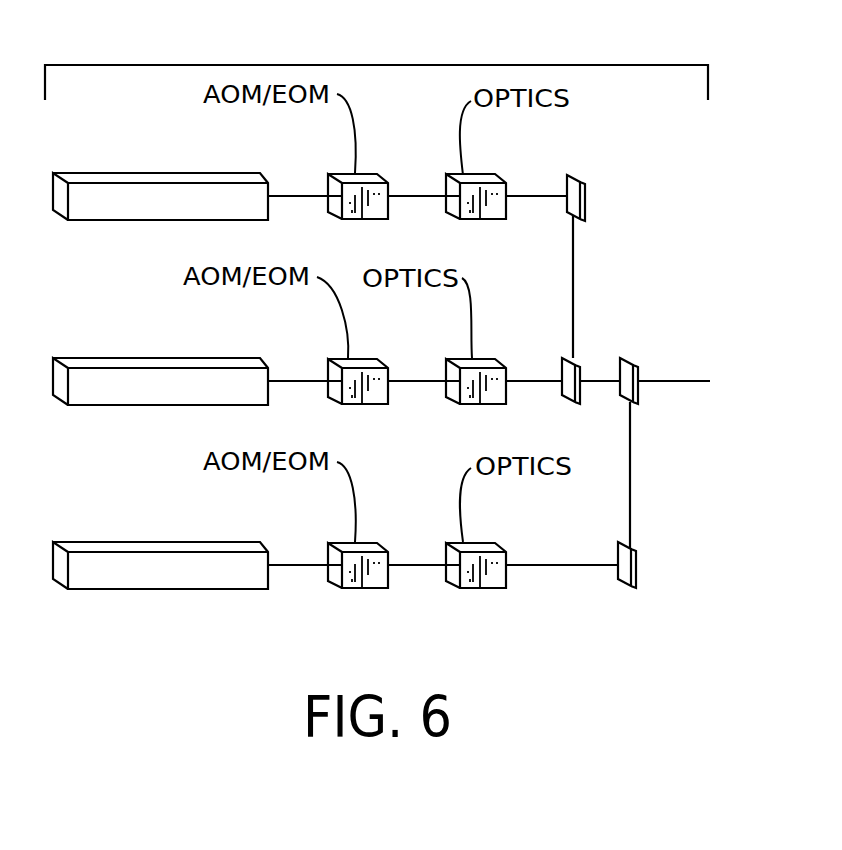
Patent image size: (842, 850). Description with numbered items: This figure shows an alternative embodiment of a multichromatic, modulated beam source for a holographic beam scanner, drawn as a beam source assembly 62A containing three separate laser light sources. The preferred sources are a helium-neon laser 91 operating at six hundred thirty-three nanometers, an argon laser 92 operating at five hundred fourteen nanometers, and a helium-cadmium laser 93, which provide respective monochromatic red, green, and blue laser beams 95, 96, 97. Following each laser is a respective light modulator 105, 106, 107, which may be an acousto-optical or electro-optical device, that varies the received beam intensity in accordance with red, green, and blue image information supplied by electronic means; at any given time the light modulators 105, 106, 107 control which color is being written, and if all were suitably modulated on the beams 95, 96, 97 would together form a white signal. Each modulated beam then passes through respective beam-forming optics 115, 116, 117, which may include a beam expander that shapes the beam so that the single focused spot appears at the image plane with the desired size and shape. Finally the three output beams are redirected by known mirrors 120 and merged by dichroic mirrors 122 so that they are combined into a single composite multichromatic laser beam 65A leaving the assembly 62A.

The beam source assembly 62A is at (345, 63).
The helium-neon laser 91 is at (168, 181).
The argon laser 92 is at (168, 366).
The helium-cadmium laser 93 is at (168, 550).
The red laser beam 95 is at (287, 195).
The green laser beam 96 is at (287, 380).
The blue laser beam 97 is at (287, 564).
The light modulator 105 is at (356, 175).
The light modulator 106 is at (356, 360).
The light modulator 107 is at (356, 544).
The beam-forming optics 115 is at (476, 175).
The beam-forming optics 116 is at (476, 360).
The beam-forming optics 117 is at (476, 544).
The mirror 120 is at (578, 175).
The dichroic mirror 122 is at (625, 358).
The composite multichromatic laser beam 65A is at (680, 382).